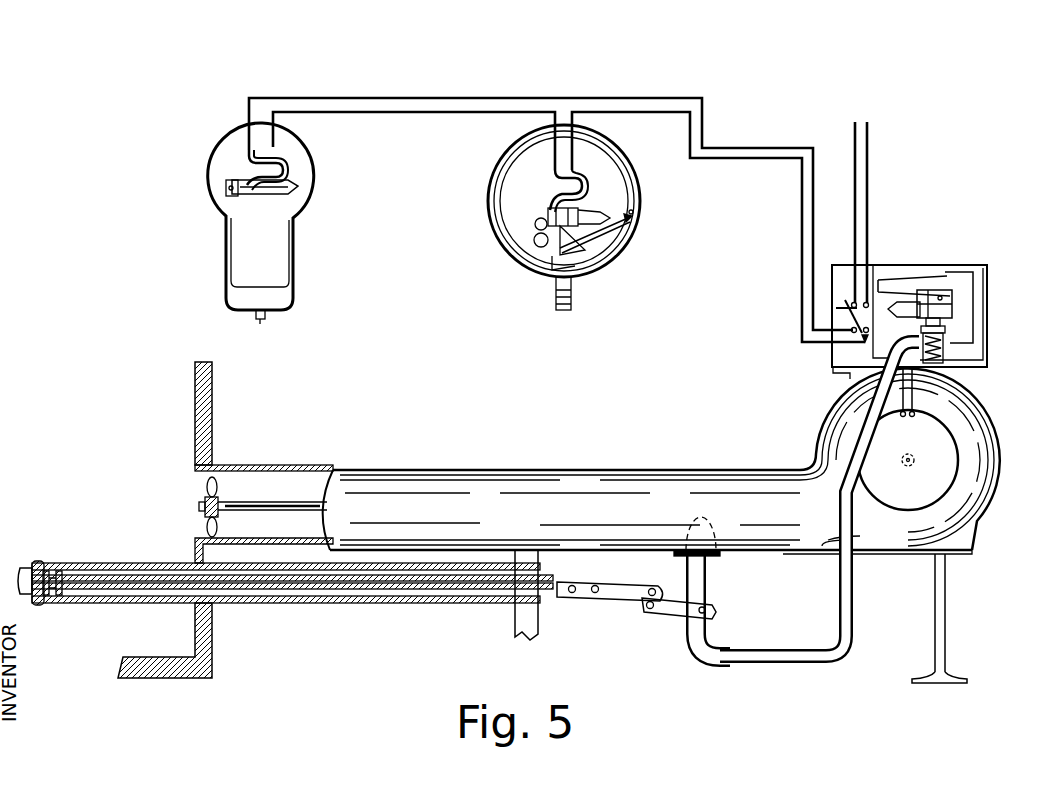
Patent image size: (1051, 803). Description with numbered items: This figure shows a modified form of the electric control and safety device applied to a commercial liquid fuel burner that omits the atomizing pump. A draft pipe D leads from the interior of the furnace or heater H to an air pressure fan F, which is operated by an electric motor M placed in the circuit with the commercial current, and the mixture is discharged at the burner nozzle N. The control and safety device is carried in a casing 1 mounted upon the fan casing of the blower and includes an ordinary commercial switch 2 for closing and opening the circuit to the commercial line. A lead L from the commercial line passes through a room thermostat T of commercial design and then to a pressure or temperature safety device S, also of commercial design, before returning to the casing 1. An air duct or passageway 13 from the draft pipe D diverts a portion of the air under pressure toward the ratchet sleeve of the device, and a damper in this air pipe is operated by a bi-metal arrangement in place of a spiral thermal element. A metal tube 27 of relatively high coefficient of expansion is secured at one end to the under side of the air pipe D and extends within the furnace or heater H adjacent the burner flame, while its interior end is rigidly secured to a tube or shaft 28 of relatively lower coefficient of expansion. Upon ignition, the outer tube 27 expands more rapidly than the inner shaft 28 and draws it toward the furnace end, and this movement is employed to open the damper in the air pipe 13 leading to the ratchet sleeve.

The room thermostat T is at (287, 228).
The pressure or temperature safety device S is at (624, 232).
The lead L is at (855, 147).
The casing 1 is at (873, 270).
The switch 2 is at (848, 319).
The furnace or heater H is at (195, 418).
The burner nozzle N is at (200, 505).
The draft pipe D is at (648, 482).
The air pressure fan F is at (977, 418).
The electric motor M is at (957, 472).
The air duct or passageway 13 is at (700, 573).
The metal tube 27 is at (112, 562).
The tube or shaft 28 is at (585, 598).